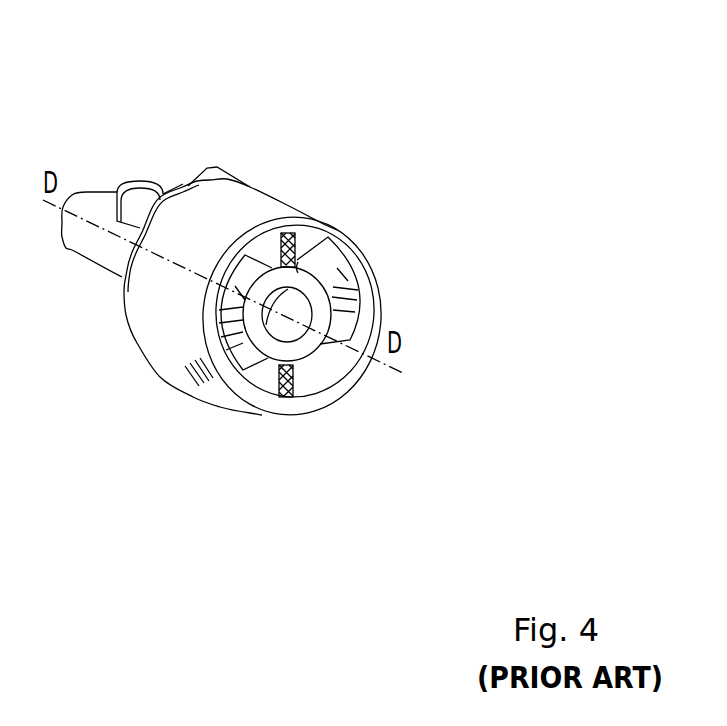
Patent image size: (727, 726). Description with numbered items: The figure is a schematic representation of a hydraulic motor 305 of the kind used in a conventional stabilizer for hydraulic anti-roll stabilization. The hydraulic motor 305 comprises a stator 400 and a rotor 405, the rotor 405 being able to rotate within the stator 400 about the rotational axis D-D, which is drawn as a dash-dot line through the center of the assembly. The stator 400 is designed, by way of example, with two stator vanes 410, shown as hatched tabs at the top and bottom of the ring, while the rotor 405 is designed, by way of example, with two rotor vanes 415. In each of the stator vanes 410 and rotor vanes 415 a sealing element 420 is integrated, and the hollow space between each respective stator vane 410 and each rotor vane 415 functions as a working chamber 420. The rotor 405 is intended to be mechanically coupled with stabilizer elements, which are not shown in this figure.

The hydraulic motor 305 is at (302, 287).
The stator 400 is at (268, 257).
The rotor 405 is at (330, 334).
The stator vane 410 is at (275, 237).
The rotor vane 415 is at (298, 262).
The sealing element 420 is at (250, 374).